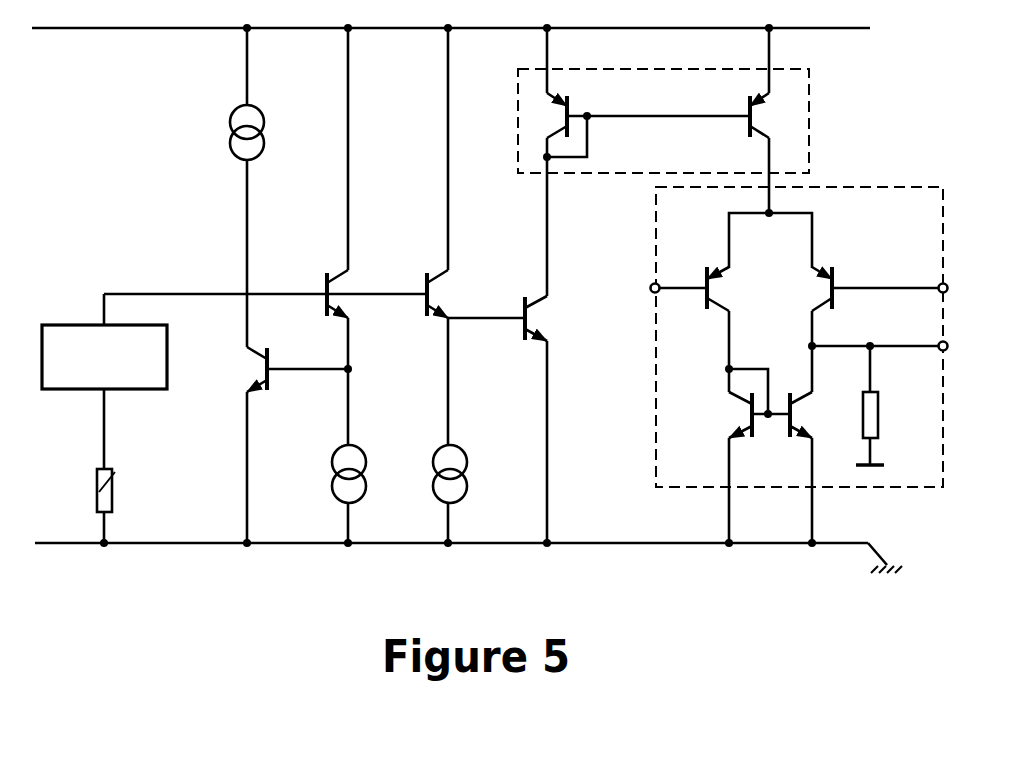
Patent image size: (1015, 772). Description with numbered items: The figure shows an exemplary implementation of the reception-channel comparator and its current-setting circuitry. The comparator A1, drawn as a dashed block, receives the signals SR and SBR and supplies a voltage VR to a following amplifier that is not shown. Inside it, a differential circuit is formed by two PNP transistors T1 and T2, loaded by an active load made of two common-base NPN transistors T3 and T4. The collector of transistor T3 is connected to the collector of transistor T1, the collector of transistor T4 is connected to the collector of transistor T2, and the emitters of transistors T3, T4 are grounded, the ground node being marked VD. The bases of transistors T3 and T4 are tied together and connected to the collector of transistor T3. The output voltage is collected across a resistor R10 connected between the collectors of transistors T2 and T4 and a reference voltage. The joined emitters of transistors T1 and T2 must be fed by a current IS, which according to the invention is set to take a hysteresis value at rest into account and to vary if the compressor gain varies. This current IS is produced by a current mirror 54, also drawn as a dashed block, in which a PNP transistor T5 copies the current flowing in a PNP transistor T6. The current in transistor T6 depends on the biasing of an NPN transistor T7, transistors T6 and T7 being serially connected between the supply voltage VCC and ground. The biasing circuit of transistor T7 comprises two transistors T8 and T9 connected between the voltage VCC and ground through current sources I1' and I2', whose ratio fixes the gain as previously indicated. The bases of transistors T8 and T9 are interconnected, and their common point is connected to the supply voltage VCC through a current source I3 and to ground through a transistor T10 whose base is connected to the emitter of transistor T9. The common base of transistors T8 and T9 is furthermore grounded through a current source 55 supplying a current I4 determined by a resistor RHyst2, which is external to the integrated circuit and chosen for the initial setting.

The current source 55 is at (88, 325).
The current mirror 54 is at (811, 99).
The comparator A1 is at (943, 216).
The resistor RHYST20 RHyst2 is at (114, 478).
The resistor R10 is at (892, 405).
The PNP transistor T1 is at (709, 329).
The PNP transistor T2 is at (866, 329).
The common base NPN transistor T3 is at (729, 467).
The common base NPN transistor T4 is at (815, 467).
The PNP transistor T5 is at (743, 120).
The PNP transistor T6 is at (648, 92).
The NPN transistor T7 is at (512, 350).
The transistor T8 is at (405, 236).
The transistor T9 is at (356, 236).
The transistor T10 is at (297, 432).
The current source I3 is at (279, 110).
The current I4 is at (185, 335).
The current source I2' is at (375, 494).
The current source I1' is at (469, 494).
The current IS is at (531, 193).
The supply voltage VCC is at (477, 30).
The voltage VD is at (635, 486).
The signal SR is at (640, 289).
The signal SBR is at (970, 290).
The voltage VR is at (899, 348).